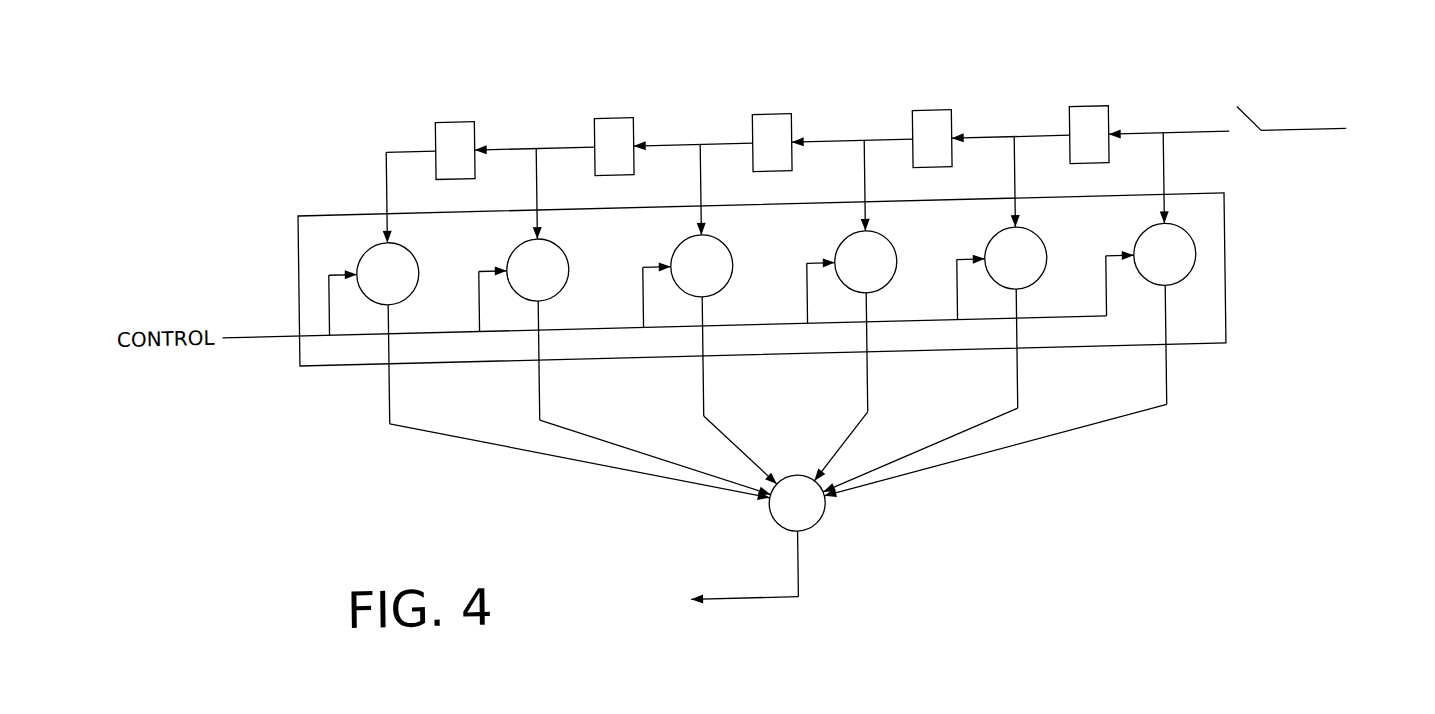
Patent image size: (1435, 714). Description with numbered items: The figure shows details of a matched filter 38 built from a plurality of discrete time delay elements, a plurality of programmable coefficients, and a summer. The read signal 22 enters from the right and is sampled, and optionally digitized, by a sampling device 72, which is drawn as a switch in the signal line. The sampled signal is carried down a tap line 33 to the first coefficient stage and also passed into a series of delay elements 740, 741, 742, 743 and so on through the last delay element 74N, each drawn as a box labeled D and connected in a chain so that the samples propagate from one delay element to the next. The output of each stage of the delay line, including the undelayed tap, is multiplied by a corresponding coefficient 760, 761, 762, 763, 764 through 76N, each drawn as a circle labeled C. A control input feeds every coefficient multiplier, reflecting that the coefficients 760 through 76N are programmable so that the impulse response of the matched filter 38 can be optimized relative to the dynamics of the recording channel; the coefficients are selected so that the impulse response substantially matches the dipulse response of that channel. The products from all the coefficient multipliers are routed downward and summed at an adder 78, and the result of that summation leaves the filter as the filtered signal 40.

The matched filter 38 is at (354, 94).
The read signal 22 is at (1298, 153).
The sampling device 72 is at (1250, 124).
The tap line 33 is at (1174, 151).
The adder 78 is at (773, 537).
The filtered signal 40 is at (752, 611).
The delay element 74N is at (454, 125).
The delay element 743 is at (613, 125).
The delay element 742 is at (771, 125).
The delay element 741 is at (931, 125).
The delay element 740 is at (1088, 125).
The coefficient 76N is at (368, 252).
The coefficient 764 is at (518, 252).
The coefficient 763 is at (682, 252).
The coefficient 762 is at (846, 252).
The coefficient 761 is at (996, 252).
The coefficient 760 is at (1145, 252).